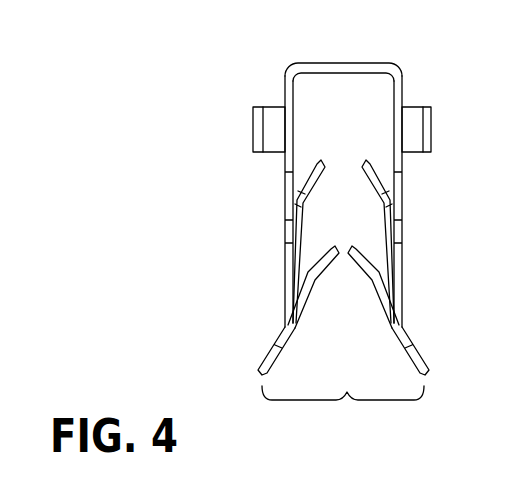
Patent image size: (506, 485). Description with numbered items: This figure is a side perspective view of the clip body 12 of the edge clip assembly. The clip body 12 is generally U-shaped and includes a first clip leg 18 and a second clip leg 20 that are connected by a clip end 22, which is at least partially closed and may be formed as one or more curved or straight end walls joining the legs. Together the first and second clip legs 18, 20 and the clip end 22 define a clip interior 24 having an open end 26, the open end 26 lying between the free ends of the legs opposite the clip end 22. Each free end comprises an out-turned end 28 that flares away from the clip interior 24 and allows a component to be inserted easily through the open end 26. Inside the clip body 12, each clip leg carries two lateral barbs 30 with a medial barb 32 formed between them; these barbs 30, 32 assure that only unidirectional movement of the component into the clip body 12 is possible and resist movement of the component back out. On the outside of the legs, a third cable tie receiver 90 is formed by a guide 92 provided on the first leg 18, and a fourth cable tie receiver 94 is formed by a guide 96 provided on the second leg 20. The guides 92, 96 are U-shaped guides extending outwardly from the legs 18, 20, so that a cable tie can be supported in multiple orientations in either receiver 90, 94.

The clip body 12 is at (174, 86).
The first clip leg 18 is at (410, 242).
The second clip leg 20 is at (277, 217).
The clip end 22 is at (331, 57).
The clip interior 24 is at (335, 123).
The open end 26 is at (343, 411).
The out-turned end 28 is at (257, 371).
The lateral barbs 30 is at (327, 253).
The medial barb 32 is at (364, 166).
The third cable tie receiver 90 is at (440, 134).
The guide 92 is at (413, 107).
The fourth cable tie receiver 94 is at (245, 122).
The guide 96 is at (276, 153).